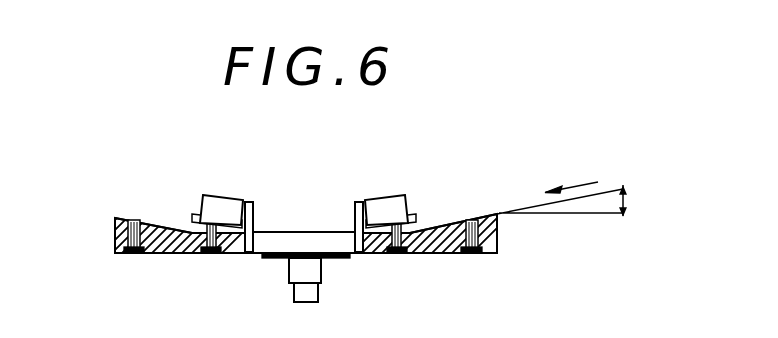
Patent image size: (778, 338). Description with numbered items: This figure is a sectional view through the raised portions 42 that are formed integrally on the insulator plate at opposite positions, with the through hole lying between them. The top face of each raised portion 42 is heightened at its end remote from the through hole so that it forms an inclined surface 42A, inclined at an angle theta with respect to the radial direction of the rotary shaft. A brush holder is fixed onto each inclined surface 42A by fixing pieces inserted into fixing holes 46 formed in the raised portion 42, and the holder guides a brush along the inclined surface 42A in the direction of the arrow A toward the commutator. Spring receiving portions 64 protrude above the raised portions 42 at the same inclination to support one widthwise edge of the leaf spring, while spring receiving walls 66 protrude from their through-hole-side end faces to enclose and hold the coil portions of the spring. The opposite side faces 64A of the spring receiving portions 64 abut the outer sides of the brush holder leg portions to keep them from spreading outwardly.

The raised portion 42 is at (500, 236).
The inclined surface 42A is at (166, 218).
The fixing hole 46 is at (138, 218).
The spring receiving portion 64 is at (228, 215).
The opposite side face 64A is at (416, 220).
The spring receiving wall 66 is at (251, 203).
The arrow A is at (595, 181).